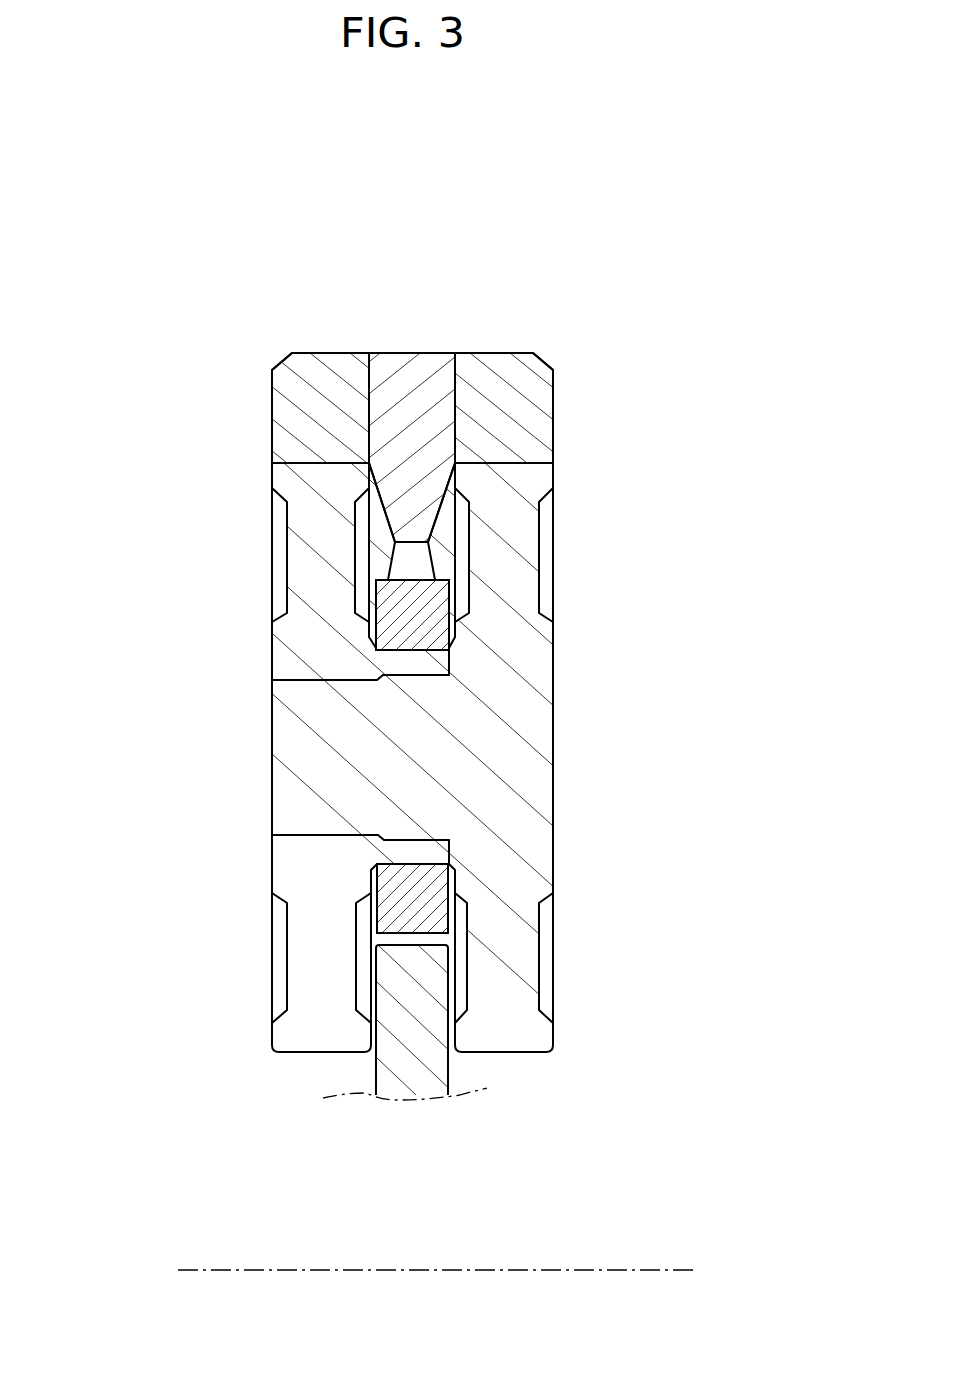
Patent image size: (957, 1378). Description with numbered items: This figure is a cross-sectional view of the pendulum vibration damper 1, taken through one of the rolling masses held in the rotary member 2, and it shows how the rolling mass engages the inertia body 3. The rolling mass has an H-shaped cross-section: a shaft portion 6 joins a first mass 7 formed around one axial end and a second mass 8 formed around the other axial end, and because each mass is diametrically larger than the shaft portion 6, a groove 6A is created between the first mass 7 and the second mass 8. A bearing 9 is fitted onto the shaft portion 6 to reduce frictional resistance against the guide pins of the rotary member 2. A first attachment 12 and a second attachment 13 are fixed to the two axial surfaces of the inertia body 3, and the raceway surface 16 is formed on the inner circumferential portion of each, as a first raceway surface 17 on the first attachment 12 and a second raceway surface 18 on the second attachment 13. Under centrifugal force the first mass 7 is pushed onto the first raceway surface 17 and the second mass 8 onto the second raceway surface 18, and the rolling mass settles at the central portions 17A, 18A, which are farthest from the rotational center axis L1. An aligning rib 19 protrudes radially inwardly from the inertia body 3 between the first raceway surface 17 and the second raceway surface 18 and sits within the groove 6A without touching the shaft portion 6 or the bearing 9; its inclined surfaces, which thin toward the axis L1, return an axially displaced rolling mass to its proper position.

The pendulum vibration damper 1 is at (619, 243).
The rotary member 2 is at (432, 1077).
The inertia body 3 is at (428, 352).
The shaft portion 6 is at (428, 665).
The groove 6A is at (387, 543).
The first mass 7 is at (303, 593).
The second mass 8 is at (525, 595).
The bearing 9 is at (433, 912).
The first attachment 12 is at (335, 352).
The second attachment 13 is at (490, 352).
The raceway surface 16 is at (213, 542).
The first raceway surface 17 is at (213, 542).
The central portion 17A is at (323, 463).
The second raceway surface 18 is at (608, 542).
The central portion 18A is at (513, 463).
The aligning rib 19 is at (423, 508).
The rotational center axis L1 is at (615, 1270).